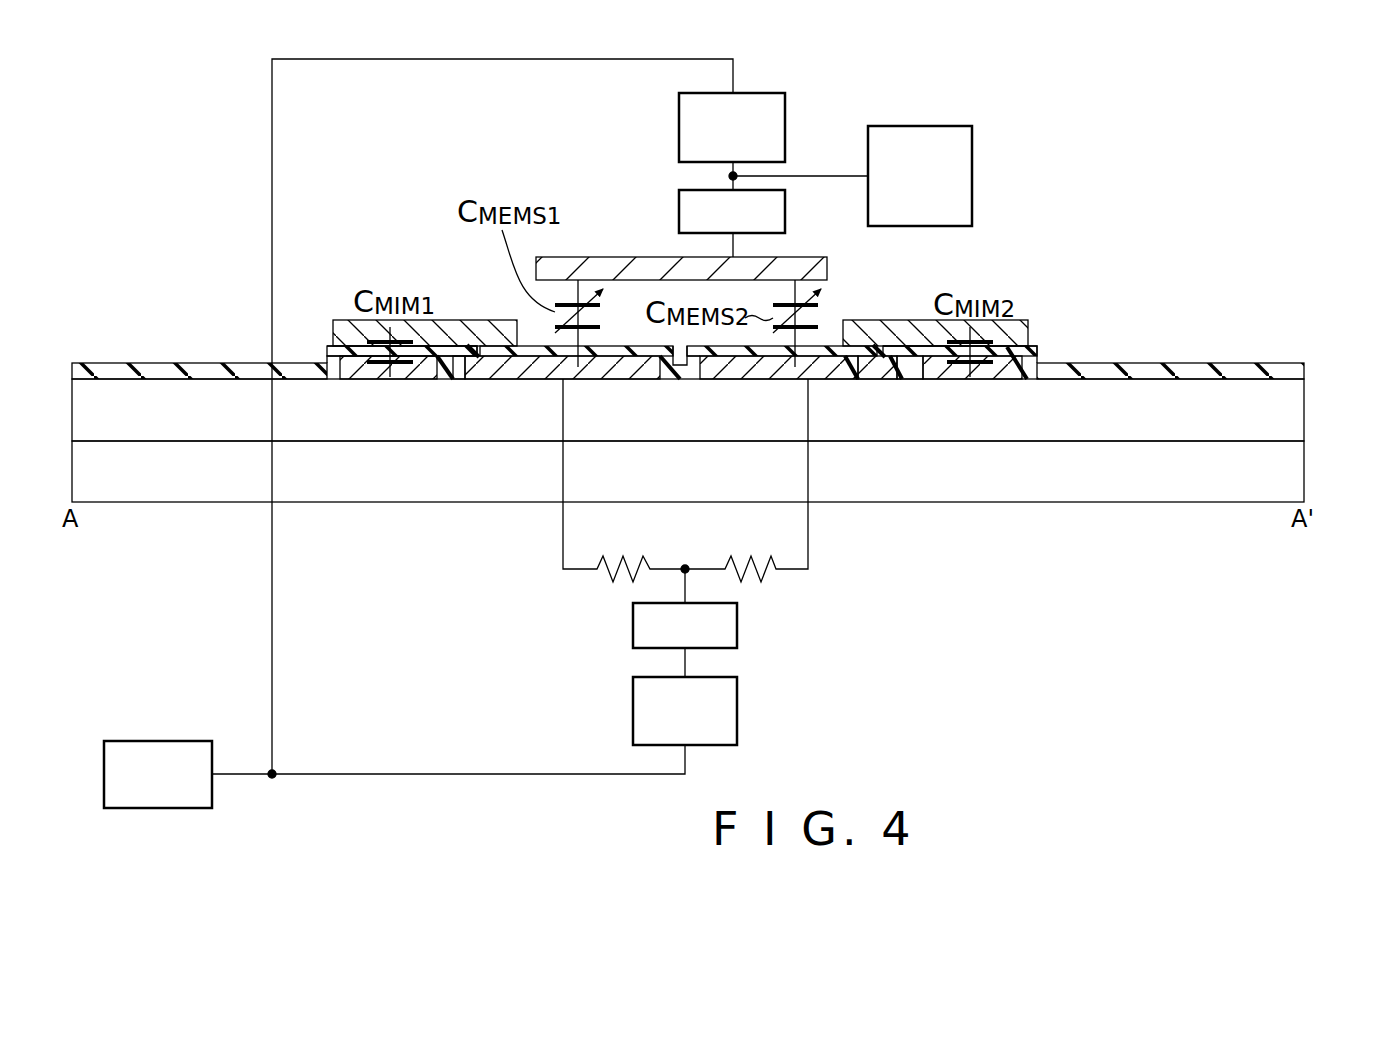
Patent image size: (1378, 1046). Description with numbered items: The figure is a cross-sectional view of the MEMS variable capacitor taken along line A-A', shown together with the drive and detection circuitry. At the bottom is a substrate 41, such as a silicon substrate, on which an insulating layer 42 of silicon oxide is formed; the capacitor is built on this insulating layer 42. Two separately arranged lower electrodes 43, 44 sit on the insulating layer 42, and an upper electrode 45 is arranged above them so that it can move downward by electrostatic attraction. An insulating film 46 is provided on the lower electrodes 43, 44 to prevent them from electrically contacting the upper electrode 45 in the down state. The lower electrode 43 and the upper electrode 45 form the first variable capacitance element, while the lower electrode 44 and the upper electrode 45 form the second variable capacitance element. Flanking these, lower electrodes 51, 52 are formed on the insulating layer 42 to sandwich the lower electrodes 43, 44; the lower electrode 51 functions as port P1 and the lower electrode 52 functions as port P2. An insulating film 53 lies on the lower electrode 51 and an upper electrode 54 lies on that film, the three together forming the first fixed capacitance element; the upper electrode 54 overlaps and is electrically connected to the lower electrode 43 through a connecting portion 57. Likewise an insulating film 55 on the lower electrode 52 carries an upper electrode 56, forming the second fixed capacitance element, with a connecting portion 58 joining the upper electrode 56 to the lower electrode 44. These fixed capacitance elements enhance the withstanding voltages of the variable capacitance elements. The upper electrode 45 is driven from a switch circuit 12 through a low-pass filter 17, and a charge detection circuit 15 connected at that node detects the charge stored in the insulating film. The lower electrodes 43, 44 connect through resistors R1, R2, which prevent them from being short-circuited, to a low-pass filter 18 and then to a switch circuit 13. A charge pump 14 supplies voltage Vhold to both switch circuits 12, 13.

The switch circuit 12 is at (787, 127).
The switch circuit 13 is at (740, 718).
The charge pump 14 is at (157, 740).
The charge detection circuit 15 is at (974, 177).
The low-pass filter 17 is at (787, 211).
The low-pass filter 18 is at (740, 627).
The substrate 41 is at (1292, 473).
The insulating layer 42 is at (1292, 410).
The lower electrode 43 is at (627, 382).
The lower electrode 44 is at (738, 382).
The upper electrode 45 is at (622, 268).
The insulating film 46 is at (671, 382).
The lower electrode 51 is at (360, 370).
The lower electrode 52 is at (1000, 372).
The insulating film 53 is at (208, 368).
The upper electrode 54 is at (471, 330).
The insulating film 55 is at (1108, 368).
The upper electrode 56 is at (897, 328).
The connecting portion 57 is at (492, 352).
The connecting portion 58 is at (868, 352).
The port P1 is at (403, 368).
The port P2 is at (955, 368).
The resistor R1 is at (630, 560).
The resistor R2 is at (757, 560).